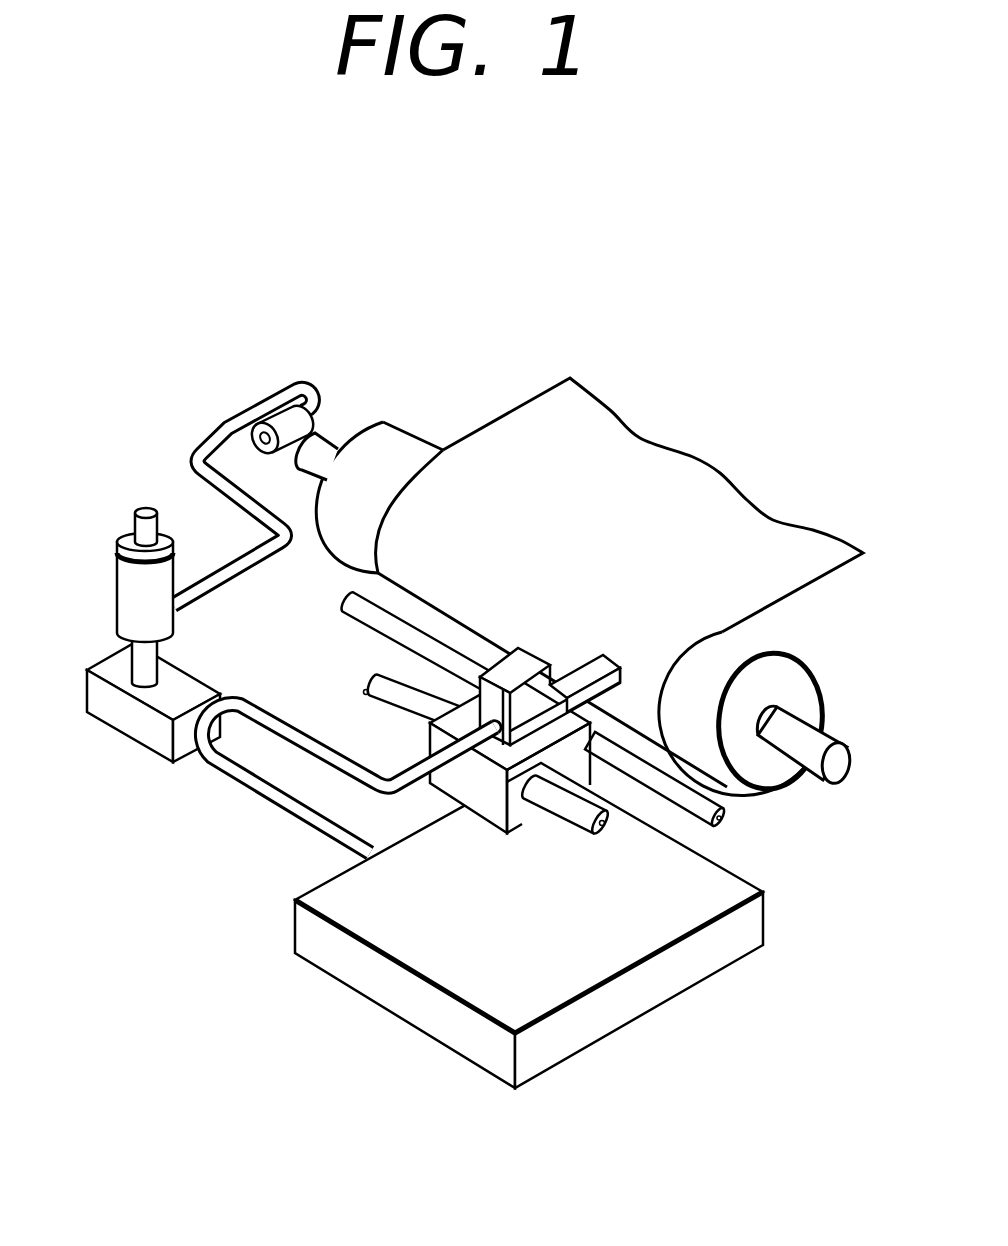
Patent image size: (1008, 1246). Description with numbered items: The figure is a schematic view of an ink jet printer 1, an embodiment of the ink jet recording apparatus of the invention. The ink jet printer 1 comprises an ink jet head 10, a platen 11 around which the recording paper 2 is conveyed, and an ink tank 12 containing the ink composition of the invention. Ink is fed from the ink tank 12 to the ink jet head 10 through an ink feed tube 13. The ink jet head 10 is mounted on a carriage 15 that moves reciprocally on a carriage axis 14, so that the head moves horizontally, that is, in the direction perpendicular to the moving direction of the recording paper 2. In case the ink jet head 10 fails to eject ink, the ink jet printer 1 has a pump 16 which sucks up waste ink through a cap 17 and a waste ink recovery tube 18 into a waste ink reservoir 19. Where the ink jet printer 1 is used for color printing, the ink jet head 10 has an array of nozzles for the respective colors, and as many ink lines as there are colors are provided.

The ink jet printer 1 is at (662, 392).
The recording paper 2 is at (766, 530).
The ink jet head 10 is at (487, 705).
The platen 11 is at (760, 652).
The ink tank 12 is at (722, 892).
The ink feed tube 13 is at (270, 793).
The carriage axis 14 is at (387, 700).
The carriage 15 is at (522, 815).
The pump 16 is at (127, 590).
The cap 17 is at (276, 425).
The waste ink recovery tube 18 is at (193, 488).
The waste ink reservoir 19 is at (142, 735).